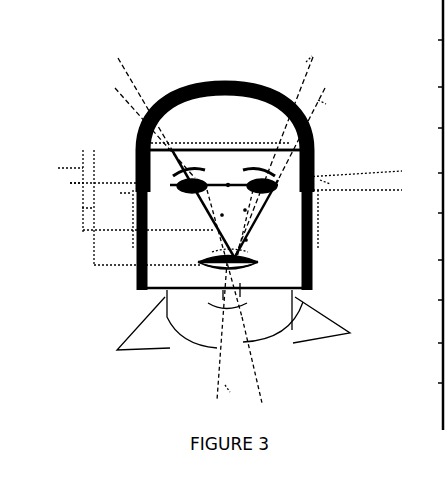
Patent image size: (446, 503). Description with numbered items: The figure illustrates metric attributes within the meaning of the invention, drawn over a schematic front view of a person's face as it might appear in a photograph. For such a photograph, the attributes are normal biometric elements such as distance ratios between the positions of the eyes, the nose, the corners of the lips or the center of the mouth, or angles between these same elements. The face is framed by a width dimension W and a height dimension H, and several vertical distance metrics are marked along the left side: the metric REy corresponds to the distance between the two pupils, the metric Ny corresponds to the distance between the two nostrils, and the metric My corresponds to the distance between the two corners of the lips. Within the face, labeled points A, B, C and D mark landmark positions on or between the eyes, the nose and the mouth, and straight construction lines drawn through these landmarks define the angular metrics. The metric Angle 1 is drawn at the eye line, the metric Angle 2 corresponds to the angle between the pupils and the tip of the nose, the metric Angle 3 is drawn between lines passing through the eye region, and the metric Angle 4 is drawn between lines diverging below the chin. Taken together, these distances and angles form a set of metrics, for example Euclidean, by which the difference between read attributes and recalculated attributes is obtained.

The face width dimension W is at (227, 137).
The face height dimension H is at (130, 219).
The metric REy is at (55, 167).
The metric Ny is at (92, 191).
The metric My is at (77, 206).
The point A between the eyes A is at (227, 179).
The point B on right facial line B is at (240, 205).
The point C on left facial line C is at (217, 210).
The point D at nose D is at (251, 237).
The eye line tilt angle Angle 1 is at (356, 183).
The metric Angle2 Angle 2 is at (344, 106).
The right auxiliary line angle Angle 3 is at (286, 52).
The chin line angle Angle 4 is at (238, 395).